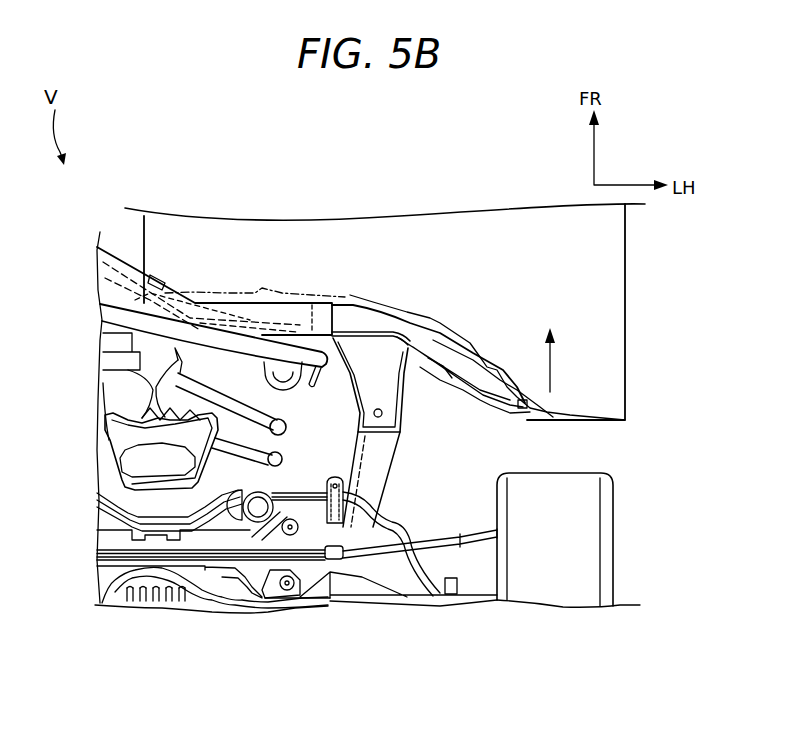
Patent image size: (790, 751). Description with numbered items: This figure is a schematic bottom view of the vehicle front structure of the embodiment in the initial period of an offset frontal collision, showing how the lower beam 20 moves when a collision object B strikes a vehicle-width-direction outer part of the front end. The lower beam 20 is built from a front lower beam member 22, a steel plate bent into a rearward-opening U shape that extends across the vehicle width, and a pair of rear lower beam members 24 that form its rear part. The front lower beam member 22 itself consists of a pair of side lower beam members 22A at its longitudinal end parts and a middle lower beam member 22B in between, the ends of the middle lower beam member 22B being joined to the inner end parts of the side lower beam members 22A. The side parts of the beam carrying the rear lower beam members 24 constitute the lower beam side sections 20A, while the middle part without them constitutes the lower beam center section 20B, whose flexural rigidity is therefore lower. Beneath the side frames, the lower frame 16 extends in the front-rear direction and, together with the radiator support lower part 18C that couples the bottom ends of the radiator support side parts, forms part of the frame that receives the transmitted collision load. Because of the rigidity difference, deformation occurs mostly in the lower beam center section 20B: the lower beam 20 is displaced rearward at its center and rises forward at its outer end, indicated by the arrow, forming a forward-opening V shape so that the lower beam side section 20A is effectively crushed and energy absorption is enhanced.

The lower frame 16 is at (380, 487).
The radiator support lower part 18C is at (297, 343).
The lower beam 20 is at (318, 296).
The lower beam side section 20A is at (473, 370).
The lower beam center section 20B is at (197, 313).
The front lower beam member 22 is at (373, 304).
The side lower beam member 22A is at (445, 350).
The middle lower beam member 22B is at (227, 300).
The rear lower beam member 24 is at (457, 388).
The collision object B is at (625, 290).